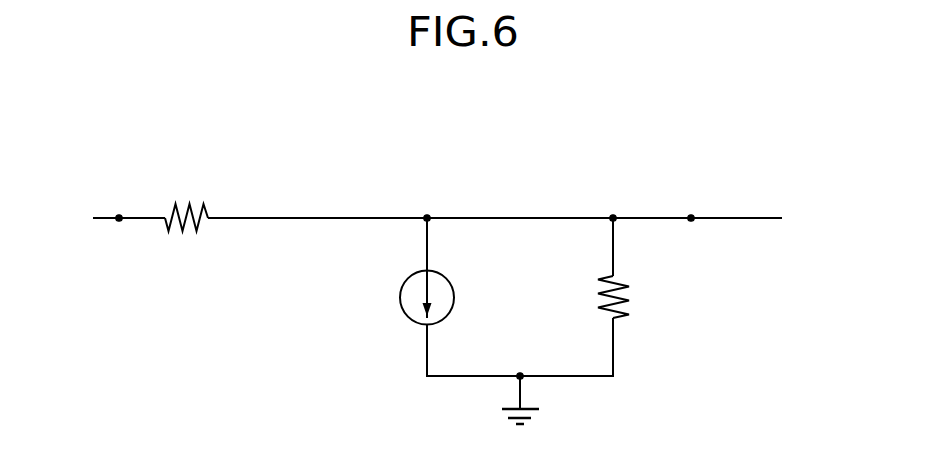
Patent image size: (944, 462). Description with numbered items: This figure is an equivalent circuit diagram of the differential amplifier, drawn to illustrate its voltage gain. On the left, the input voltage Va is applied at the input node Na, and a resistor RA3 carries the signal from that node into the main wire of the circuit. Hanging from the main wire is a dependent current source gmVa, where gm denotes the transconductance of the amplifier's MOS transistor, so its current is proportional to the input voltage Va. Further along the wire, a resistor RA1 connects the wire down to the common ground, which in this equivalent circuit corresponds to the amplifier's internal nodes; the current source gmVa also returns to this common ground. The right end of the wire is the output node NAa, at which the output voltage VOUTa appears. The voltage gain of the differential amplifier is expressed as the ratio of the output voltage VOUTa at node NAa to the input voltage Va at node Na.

The voltage of the input node Va is at (91, 219).
The input node Na is at (119, 218).
The resistor RA3 is at (188, 232).
The dependent current source gmVa is at (397, 297).
The resistor RA1 is at (591, 297).
The output node NAa is at (691, 218).
The voltage of the output node VOUTa is at (806, 219).